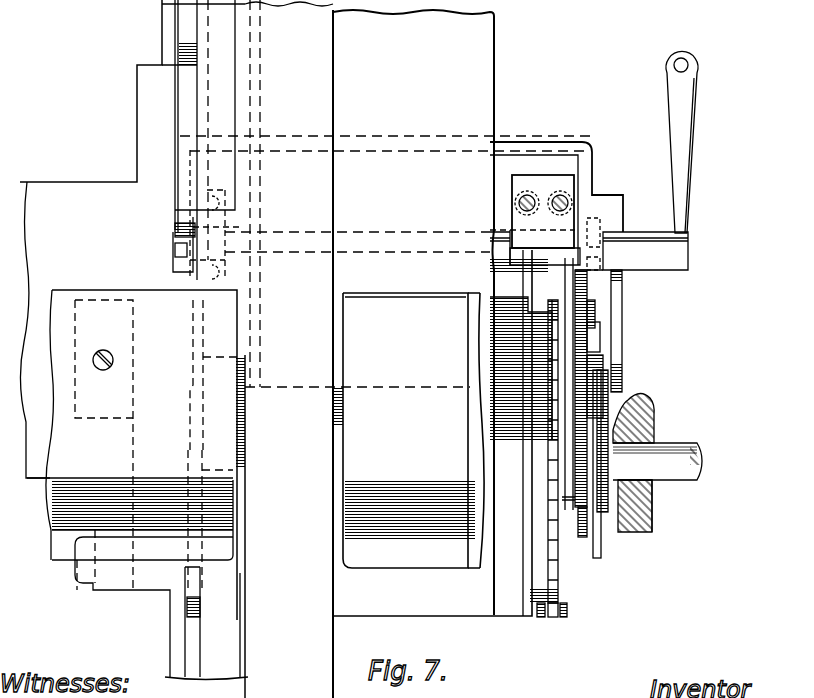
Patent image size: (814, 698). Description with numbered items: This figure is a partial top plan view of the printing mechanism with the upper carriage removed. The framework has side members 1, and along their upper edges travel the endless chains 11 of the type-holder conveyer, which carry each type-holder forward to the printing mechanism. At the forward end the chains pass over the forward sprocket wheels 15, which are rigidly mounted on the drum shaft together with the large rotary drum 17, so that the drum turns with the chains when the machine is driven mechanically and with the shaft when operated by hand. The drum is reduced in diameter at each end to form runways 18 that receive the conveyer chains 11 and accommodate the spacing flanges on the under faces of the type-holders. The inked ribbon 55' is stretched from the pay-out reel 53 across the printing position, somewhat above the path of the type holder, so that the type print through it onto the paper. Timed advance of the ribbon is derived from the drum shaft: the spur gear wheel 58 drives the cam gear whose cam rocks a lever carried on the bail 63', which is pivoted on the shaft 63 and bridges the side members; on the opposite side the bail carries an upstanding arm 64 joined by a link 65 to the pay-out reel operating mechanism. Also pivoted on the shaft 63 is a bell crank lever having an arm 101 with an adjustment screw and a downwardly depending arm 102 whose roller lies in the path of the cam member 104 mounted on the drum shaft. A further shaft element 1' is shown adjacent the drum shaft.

The link 65 is at (173, 98).
The upstanding arm 64 is at (172, 250).
The shaft 63 is at (385, 193).
The bail 63' is at (556, 183).
The ribbon 55' is at (407, 414).
The runways 18 is at (545, 307).
The arm 101 is at (685, 172).
The pay-out reel 53 is at (590, 287).
The downwardly depending arm 102 is at (620, 345).
The spur gear wheel 58 is at (610, 405).
The side members 1 is at (657, 447).
The shaft collar 1' is at (653, 505).
The cam member 104 is at (603, 548).
The forward sprocket wheels 15 is at (558, 577).
The endless chains 11 is at (540, 617).
The rotary drum 17 is at (493, 614).